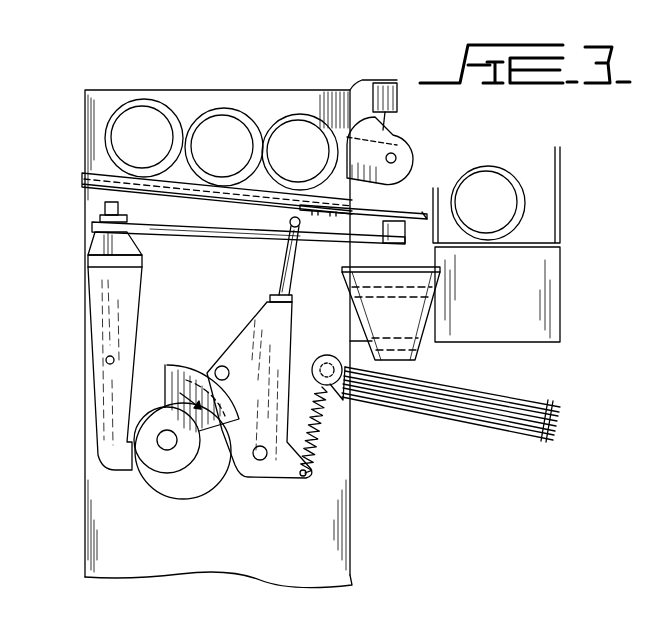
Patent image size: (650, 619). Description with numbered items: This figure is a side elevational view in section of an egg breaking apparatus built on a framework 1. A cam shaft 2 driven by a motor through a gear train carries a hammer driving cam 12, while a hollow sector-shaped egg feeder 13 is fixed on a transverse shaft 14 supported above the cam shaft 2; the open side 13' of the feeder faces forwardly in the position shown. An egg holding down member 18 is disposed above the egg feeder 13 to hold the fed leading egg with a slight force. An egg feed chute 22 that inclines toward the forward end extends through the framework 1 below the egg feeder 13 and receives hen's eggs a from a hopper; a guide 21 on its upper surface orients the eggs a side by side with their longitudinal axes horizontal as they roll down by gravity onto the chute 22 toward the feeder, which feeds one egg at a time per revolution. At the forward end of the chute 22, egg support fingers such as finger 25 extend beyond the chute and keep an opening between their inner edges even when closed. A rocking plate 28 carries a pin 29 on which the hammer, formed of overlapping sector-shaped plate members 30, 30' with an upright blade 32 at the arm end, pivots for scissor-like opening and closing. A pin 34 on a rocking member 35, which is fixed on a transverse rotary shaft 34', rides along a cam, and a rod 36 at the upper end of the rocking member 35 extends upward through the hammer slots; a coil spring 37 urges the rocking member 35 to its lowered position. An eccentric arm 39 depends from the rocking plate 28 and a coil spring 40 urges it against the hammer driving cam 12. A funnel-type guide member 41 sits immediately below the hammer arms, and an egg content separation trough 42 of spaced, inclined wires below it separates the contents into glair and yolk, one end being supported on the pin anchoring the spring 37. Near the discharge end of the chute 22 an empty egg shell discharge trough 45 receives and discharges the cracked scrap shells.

The framework 1 is at (95, 475).
The hen's eggs a is at (142, 110).
The cam shaft 2 is at (163, 447).
The hammer driving cam 12 is at (195, 485).
The egg feeder 13 is at (403, 143).
The open side of the feeder 13' is at (302, 154).
The transverse shaft 14 is at (398, 155).
The egg holding down member 18 is at (385, 83).
The guide 21 is at (258, 195).
The egg feed chute 22 is at (218, 190).
The egg support finger 25 is at (395, 198).
The rocking plate 28 is at (88, 262).
The pin 29 is at (105, 208).
The sector-shaped plate member 30 is at (248, 222).
The sector-shaped plate member 30' is at (225, 252).
The upright blade 32 is at (412, 222).
The pin 34 is at (228, 336).
The transverse rotary shaft 34' is at (267, 490).
The rocking member 35 is at (287, 315).
The rod 36 is at (282, 260).
The coil spring 37 is at (315, 437).
The eccentric arm 39 is at (98, 333).
The coil spring 40 is at (194, 370).
The funnel-type guide member 41 is at (420, 342).
The egg content separation trough 42 is at (472, 417).
The empty egg shell discharge trough 45 is at (547, 273).